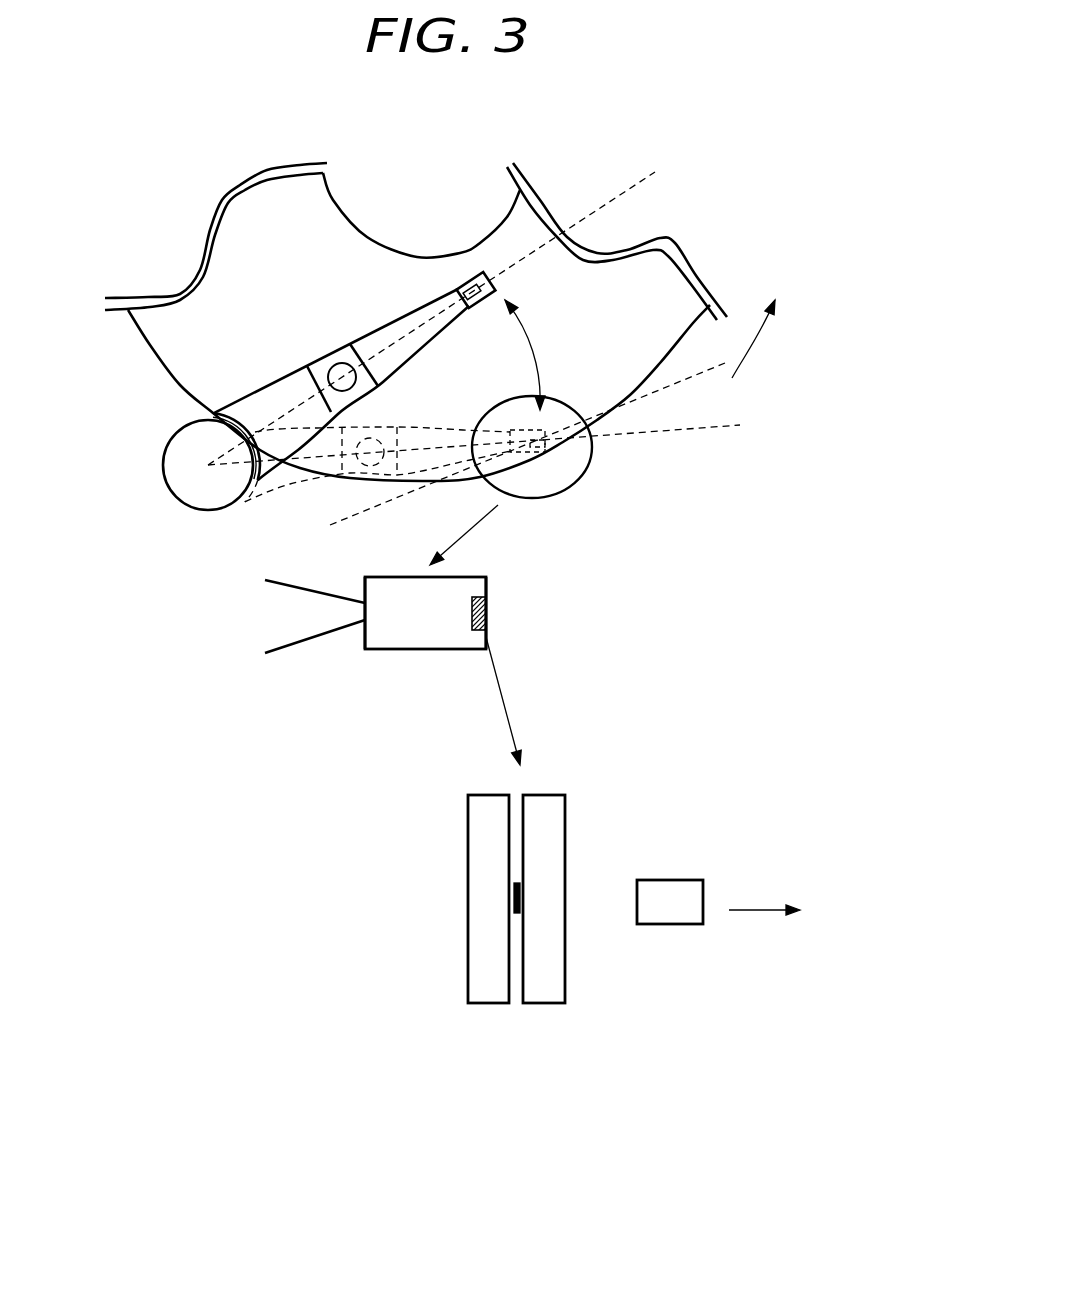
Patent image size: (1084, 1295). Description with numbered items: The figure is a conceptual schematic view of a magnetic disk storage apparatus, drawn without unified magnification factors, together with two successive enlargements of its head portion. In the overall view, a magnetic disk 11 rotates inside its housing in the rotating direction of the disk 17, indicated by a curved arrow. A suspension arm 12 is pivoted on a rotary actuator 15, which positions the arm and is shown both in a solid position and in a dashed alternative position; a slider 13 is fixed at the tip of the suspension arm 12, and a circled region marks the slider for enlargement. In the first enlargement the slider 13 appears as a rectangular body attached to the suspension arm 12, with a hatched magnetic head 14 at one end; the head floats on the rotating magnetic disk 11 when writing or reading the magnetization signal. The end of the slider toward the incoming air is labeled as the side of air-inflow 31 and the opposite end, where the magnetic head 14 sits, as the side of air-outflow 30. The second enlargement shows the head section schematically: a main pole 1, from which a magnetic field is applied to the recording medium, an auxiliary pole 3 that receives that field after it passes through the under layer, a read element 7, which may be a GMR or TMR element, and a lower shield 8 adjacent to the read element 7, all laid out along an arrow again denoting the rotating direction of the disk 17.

The main pole 1 is at (657, 880).
The auxiliary pole 3 is at (527, 1003).
The read element 7 is at (523, 905).
The lower shield 8 is at (482, 1005).
The magnetic disk 11 is at (230, 248).
The suspension arm 12 is at (395, 322).
The slider 13 is at (537, 455).
The magnetic head 14 is at (487, 611).
The rotary actuator 15 is at (187, 437).
The rotating direction of the disk 17 is at (767, 330).
The side of air-outflow 30 is at (487, 583).
The side of air-inflow 31 is at (364, 626).